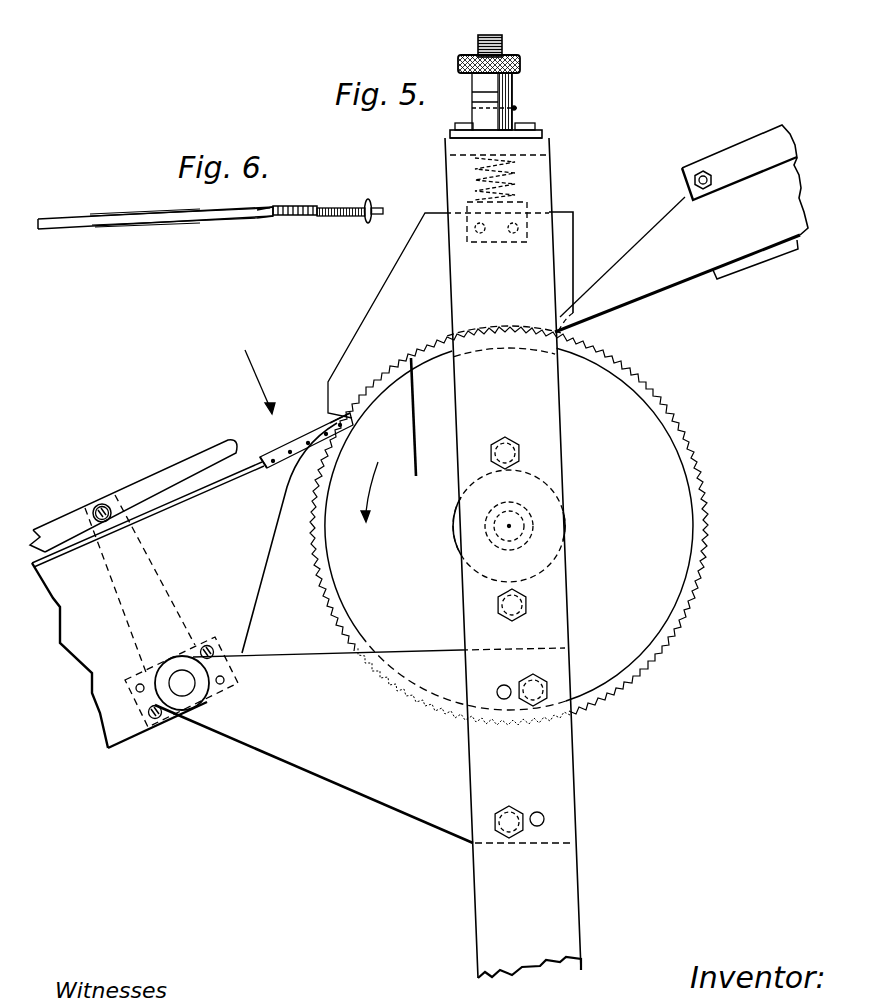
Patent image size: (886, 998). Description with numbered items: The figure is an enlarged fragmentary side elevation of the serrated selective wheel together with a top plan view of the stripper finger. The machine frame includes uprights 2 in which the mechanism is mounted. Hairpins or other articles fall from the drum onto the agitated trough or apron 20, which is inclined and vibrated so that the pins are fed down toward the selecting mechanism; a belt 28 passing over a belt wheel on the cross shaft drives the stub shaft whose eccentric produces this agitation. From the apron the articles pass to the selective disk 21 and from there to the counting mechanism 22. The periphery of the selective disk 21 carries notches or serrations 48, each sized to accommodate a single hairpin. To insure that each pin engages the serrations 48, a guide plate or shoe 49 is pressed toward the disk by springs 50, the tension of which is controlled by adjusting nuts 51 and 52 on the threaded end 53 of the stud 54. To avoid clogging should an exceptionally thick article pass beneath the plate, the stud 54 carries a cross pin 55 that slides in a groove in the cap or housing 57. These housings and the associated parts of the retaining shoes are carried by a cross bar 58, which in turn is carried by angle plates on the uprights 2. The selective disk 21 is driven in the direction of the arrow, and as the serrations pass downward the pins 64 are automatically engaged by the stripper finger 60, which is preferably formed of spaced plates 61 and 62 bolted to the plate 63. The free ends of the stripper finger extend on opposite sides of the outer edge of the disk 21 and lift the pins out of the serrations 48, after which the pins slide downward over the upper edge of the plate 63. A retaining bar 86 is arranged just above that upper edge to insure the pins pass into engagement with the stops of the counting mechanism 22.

In FIG. 5, the uprights 2 is at (562, 773).
In FIG. 5, the agitated trough or apron 20 is at (745, 258).
In FIG. 5, the selective disk 21 is at (672, 430).
In FIG. 6, the selective disk 21 is at (347, 218).
In FIG. 5, the counting mechanism 22 is at (225, 578).
In FIG. 5, the belt 28 is at (647, 288).
In FIG. 5, the notches or serrations 48 is at (695, 450).
In FIG. 6, the notches or serrations 48 is at (330, 210).
In FIG. 5, the guide plate or shoe 49 is at (378, 304).
In FIG. 5, the springs 50 is at (515, 182).
In FIG. 5, the adjusting nut 51 is at (512, 92).
In FIG. 5, the adjusting nut 52 is at (520, 72).
In FIG. 5, the threaded end 53 is at (500, 40).
In FIG. 5, the stud 54 is at (520, 195).
In FIG. 5, the cross pin 55 is at (518, 108).
In FIG. 5, the cap or housing 57 is at (540, 130).
In FIG. 5, the cross bar 58 is at (545, 155).
In FIG. 5, the stripper finger 60 is at (317, 430).
In FIG. 6, the stripper finger 60 is at (257, 218).
In FIG. 6, the spaced plate 61 is at (145, 212).
In FIG. 5, the spaced plate 62 is at (287, 447).
In FIG. 6, the spaced plate 62 is at (167, 227).
In FIG. 5, the plate 63 is at (253, 463).
In FIG. 6, the plate 63 is at (55, 220).
In FIG. 5, the pins 64 is at (417, 413).
In FIG. 5, the retaining bar 86 is at (150, 478).